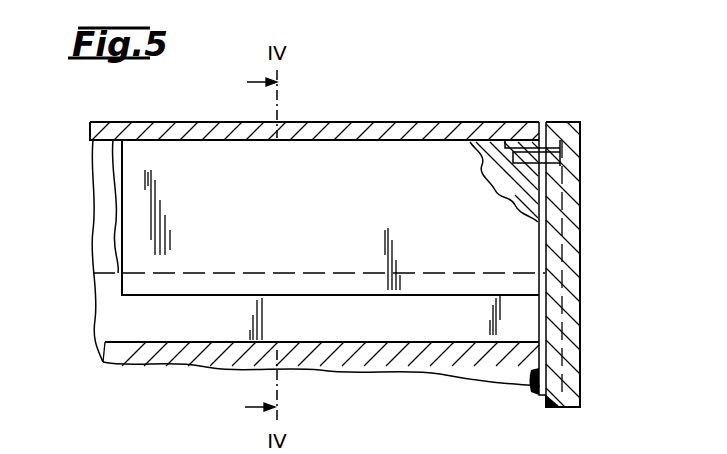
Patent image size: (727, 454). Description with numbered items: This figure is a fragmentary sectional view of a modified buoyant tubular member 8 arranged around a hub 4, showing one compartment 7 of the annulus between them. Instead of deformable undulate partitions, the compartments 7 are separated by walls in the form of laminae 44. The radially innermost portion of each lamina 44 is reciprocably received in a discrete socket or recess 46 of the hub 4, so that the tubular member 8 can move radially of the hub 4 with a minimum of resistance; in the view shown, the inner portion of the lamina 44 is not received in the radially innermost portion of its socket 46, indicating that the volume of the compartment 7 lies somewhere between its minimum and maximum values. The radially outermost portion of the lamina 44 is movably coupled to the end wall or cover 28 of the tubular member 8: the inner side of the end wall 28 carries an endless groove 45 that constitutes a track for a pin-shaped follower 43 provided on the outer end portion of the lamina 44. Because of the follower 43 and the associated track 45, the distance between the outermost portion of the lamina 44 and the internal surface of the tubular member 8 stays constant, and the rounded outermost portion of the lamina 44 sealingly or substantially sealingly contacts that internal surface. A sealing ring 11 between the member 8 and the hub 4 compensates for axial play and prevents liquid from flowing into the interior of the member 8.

The hub 4 is at (201, 360).
The compartment 7 is at (288, 206).
The tubular member 8 is at (345, 132).
The sealing ring 11 is at (548, 380).
The end wall 28 is at (572, 276).
The pin-shaped follower 43 is at (546, 130).
The lamina 44 is at (126, 200).
The groove 45 is at (562, 158).
The socket 46 is at (118, 322).